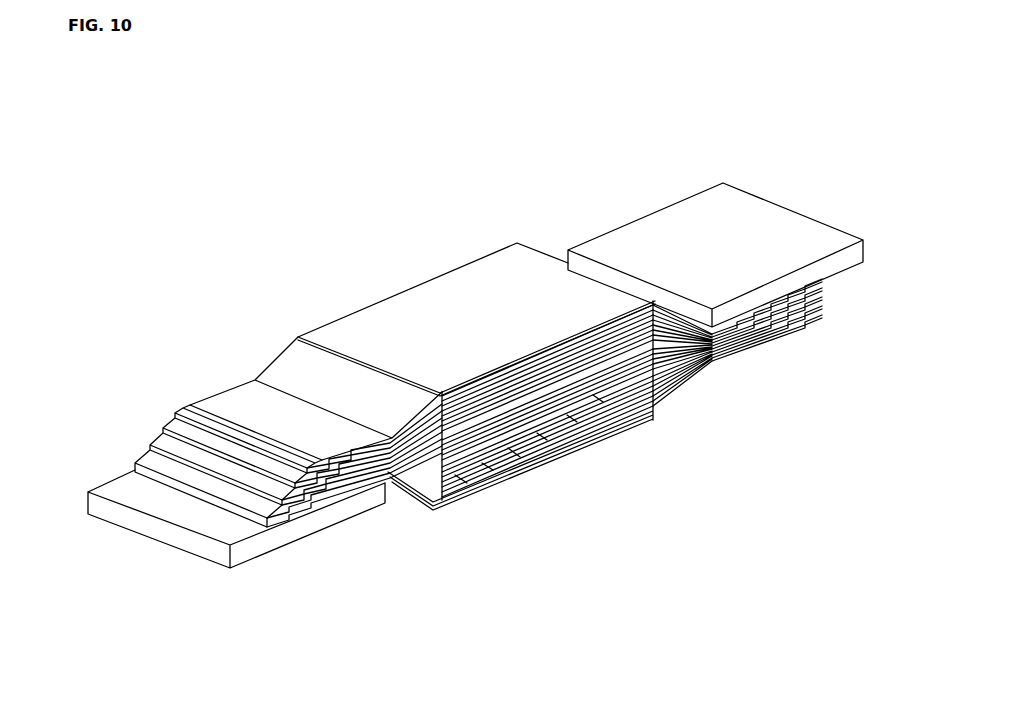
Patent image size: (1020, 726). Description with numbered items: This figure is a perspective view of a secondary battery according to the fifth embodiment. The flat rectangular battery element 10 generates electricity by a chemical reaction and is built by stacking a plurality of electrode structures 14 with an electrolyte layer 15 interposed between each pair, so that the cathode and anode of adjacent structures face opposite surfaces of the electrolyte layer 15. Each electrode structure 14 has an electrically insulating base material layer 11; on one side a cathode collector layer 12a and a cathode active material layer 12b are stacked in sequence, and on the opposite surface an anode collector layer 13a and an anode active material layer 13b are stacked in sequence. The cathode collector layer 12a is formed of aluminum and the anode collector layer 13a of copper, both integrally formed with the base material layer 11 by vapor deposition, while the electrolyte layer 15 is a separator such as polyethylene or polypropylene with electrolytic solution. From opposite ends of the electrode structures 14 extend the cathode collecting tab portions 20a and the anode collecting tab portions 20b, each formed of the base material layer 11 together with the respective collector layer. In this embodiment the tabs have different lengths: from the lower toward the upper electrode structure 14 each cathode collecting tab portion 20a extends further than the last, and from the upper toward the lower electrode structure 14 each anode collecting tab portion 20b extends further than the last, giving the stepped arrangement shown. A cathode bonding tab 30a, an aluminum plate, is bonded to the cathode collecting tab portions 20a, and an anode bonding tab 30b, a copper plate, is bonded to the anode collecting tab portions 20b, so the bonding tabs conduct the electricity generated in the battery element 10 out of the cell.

The battery element 10 is at (384, 288).
The base material layer 11 is at (571, 447).
The cathode collector layer 12a is at (537, 465).
The cathode active material layer 12b is at (502, 478).
The anode collector layer 13a is at (600, 437).
The anode active material layer 13b is at (637, 422).
The electrode structure 14 is at (540, 414).
The electrolyte layer 15 is at (476, 483).
The cathode collecting tab portion 20a is at (226, 390).
The anode collecting tab portion 20b is at (750, 354).
The cathode bonding tab 30a is at (288, 534).
The anode bonding tab 30b is at (665, 224).